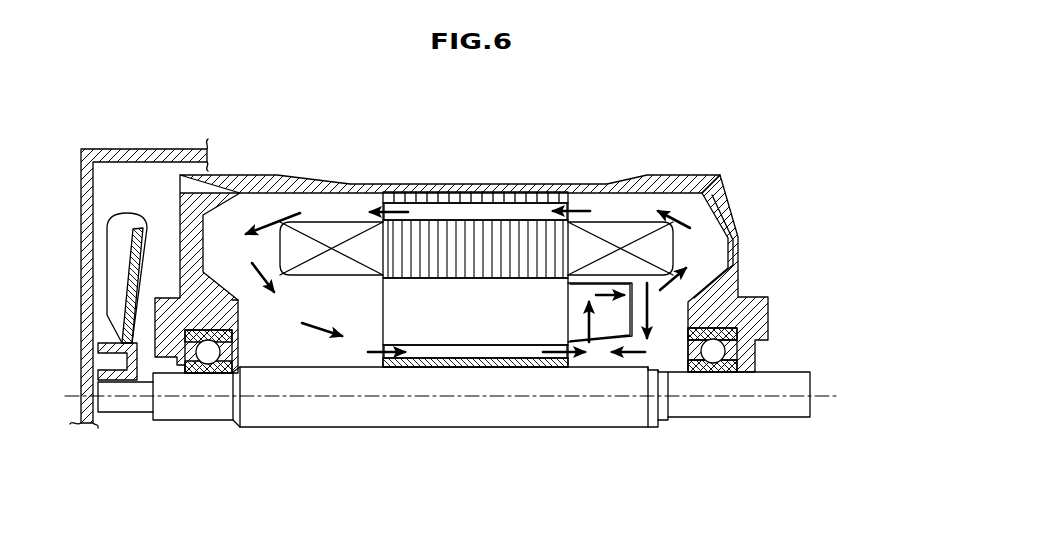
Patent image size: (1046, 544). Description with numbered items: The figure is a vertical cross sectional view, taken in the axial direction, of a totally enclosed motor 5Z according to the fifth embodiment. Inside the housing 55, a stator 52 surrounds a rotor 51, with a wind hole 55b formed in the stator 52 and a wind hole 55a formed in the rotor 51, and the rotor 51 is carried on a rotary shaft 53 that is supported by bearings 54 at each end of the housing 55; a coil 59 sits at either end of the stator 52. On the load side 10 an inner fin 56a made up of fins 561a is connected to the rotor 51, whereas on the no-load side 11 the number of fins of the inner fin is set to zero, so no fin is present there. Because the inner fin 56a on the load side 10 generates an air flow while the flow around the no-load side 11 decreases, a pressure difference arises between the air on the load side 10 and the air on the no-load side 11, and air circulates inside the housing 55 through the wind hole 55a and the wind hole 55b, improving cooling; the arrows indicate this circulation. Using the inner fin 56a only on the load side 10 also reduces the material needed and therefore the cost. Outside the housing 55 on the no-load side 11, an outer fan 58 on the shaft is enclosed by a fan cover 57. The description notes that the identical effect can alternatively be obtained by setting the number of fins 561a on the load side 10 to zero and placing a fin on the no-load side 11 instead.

The totally enclosed motor 5Z is at (790, 183).
The housing 55 is at (732, 218).
The no-load side 11 is at (223, 227).
The load side 10 is at (680, 220).
The stator 52 is at (470, 191).
The wind hole 55b is at (537, 212).
The coil 59 is at (368, 248).
The rotor 51 is at (522, 320).
The wind hole 55a is at (450, 349).
The fin 561a is at (618, 310).
The inner fin 56a is at (594, 348).
The rotary shaft 53 is at (765, 410).
The bearing 54 is at (713, 351).
The fan cover 57 is at (167, 150).
The outer fan 58 is at (125, 237).